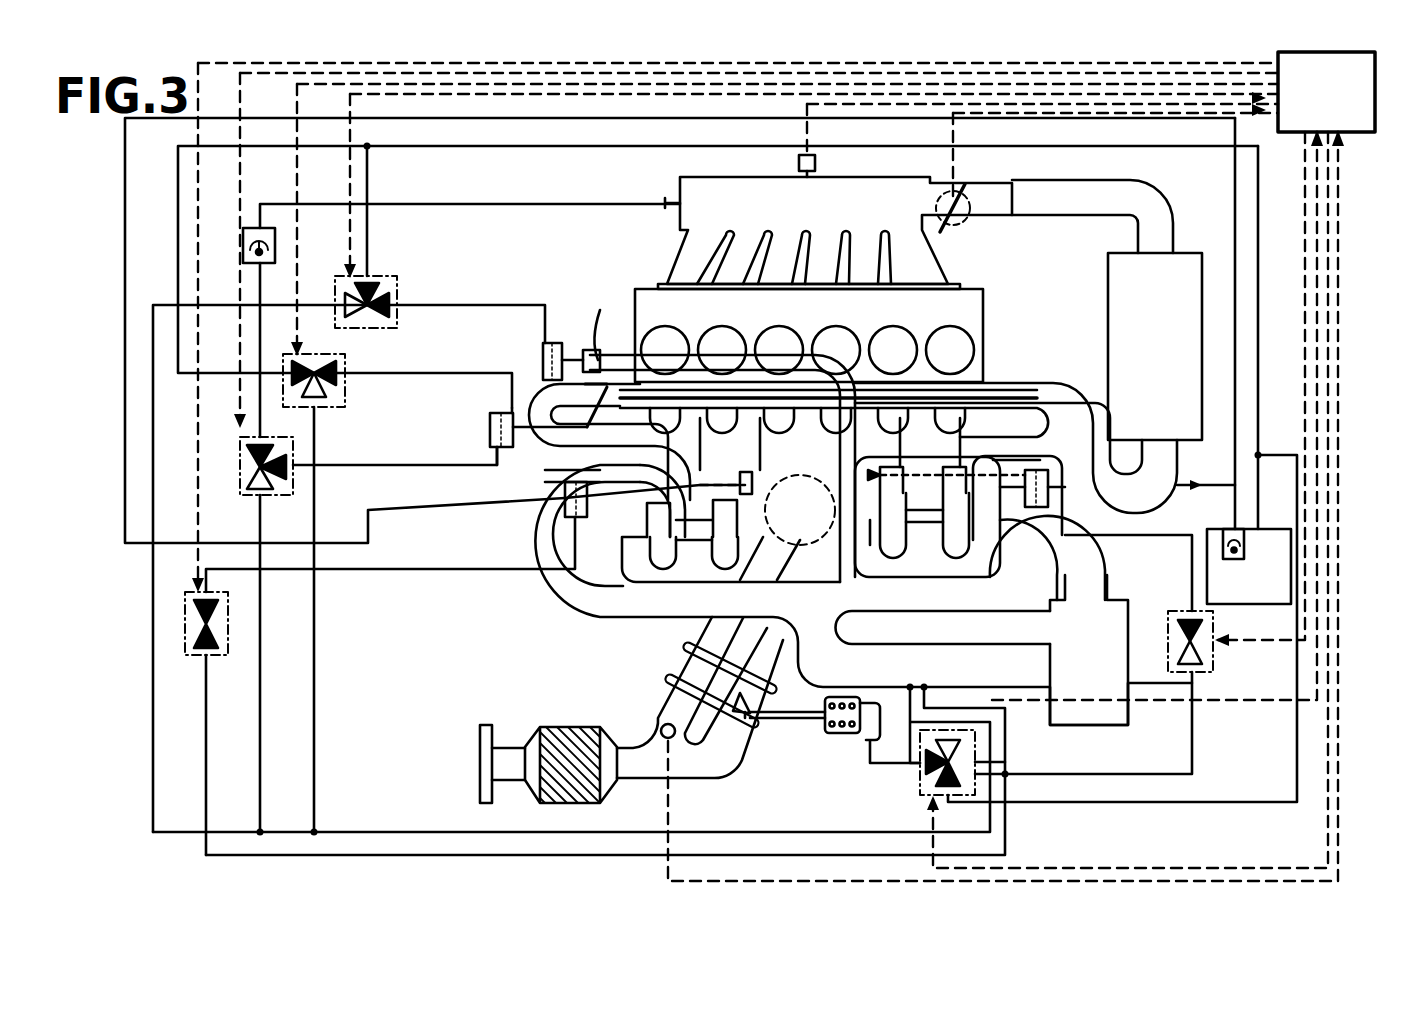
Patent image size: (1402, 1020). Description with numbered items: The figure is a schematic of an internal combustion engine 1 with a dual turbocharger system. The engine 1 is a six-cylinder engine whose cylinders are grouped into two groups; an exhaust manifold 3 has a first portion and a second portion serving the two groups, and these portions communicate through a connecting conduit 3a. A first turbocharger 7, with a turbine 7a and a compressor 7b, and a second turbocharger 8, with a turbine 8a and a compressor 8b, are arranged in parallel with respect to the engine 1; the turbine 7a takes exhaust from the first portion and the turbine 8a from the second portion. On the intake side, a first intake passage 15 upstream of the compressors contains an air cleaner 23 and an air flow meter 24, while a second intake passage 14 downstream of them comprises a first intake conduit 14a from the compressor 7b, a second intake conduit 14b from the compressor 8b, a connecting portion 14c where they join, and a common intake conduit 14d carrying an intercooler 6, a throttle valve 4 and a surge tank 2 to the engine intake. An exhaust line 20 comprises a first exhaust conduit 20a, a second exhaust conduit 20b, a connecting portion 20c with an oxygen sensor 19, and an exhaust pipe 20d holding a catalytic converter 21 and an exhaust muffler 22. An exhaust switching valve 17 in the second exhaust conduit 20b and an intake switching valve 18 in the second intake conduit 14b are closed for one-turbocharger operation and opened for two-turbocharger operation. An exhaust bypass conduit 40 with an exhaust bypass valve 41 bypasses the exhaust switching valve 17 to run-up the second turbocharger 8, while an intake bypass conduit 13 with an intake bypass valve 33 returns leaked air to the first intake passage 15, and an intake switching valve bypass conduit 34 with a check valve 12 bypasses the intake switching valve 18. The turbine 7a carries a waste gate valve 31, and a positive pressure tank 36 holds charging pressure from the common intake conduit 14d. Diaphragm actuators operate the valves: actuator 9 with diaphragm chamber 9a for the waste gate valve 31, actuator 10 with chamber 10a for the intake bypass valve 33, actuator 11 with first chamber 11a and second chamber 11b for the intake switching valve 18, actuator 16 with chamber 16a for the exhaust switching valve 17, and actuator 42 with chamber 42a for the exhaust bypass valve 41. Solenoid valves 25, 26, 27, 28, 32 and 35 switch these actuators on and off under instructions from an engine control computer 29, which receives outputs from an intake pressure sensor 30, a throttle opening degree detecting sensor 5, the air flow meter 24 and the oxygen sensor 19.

The internal combustion engine 1 is at (983, 332).
The surge tank 2 is at (752, 178).
The exhaust manifold 3 is at (965, 412).
The connecting conduit 3a is at (800, 418).
The throttle valve 4 is at (955, 232).
The throttle opening degree detecting sensor 5 is at (970, 175).
The intercooler 6 is at (1108, 302).
The first turbocharger 7 is at (927, 517).
The turbine 7a is at (890, 537).
The compressor 7b is at (1000, 552).
The second turbocharger 8 is at (731, 541).
The turbine 8a is at (700, 562).
The compressor 8b is at (612, 572).
The actuator 9 is at (1025, 488).
The diaphragm chamber 9a is at (1062, 500).
The actuator 10 is at (543, 360).
The diaphragm chamber 10a is at (545, 332).
The actuator 11 is at (490, 428).
The first chamber 11a is at (497, 450).
The second chamber 11b is at (510, 412).
The check valve 12 is at (609, 442).
The intake bypass conduit 13 is at (752, 355).
The second intake passage 14 is at (1160, 480).
The first intake conduit 14a is at (1022, 387).
The second intake conduit 14b is at (545, 478).
The connecting portion 14c is at (1085, 440).
The common intake conduit 14d is at (1130, 182).
The first intake passage 15 is at (882, 668).
The actuator 16 is at (830, 742).
The diaphragm chamber 16a is at (868, 762).
The exhaust switching valve 17 is at (745, 732).
The intake switching valve 18 is at (605, 411).
The oxygen sensor 19 is at (660, 731).
The exhaust line 20 is at (735, 777).
The first exhaust conduit 20a is at (680, 647).
The second exhaust conduit 20b is at (768, 682).
The connecting portion 20c is at (685, 774).
The exhaust pipe 20d is at (525, 750).
The catalytic converter 21 is at (565, 797).
The exhaust muffler 22 is at (480, 730).
The air cleaner 23 is at (1128, 672).
The air flow meter 24 is at (970, 650).
The three-way solenoid valve 25 is at (340, 354).
The three-way solenoid valve 26 is at (252, 495).
The three-way solenoid valve 27 is at (386, 276).
The three-way solenoid valve 28 is at (915, 782).
The engine control computer 29 is at (1285, 122).
The intake pressure sensor 30 is at (815, 163).
The waste gate valve 31 is at (878, 475).
The two-way solenoid valve 32 is at (228, 648).
The intake bypass valve 33 is at (590, 350).
The intake switching valve bypass conduit 34 is at (598, 350).
The solenoid valve 35 is at (1213, 655).
The positive pressure tank 36 is at (1240, 604).
The exhaust bypass conduit 40 is at (800, 510).
The exhaust bypass valve 41 is at (752, 492).
The actuator 42 is at (565, 517).
The diaphragm chamber 42a is at (540, 505).